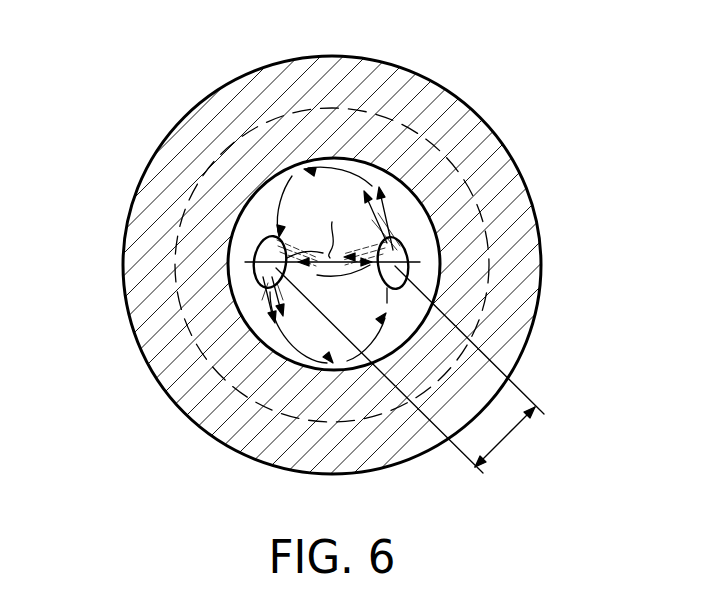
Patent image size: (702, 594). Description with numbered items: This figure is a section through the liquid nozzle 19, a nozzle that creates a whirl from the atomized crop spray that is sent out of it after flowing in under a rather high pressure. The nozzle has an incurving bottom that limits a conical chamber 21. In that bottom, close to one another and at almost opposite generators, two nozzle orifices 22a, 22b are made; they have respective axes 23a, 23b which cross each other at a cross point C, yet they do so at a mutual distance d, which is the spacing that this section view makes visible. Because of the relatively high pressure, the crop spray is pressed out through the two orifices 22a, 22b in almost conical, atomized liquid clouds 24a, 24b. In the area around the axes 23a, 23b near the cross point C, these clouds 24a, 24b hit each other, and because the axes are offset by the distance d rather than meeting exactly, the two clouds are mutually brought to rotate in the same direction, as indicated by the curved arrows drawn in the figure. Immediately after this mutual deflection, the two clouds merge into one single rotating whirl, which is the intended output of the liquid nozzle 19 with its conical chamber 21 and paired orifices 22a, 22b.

The liquid nozzle 19 is at (512, 197).
The conical chamber 21 is at (413, 215).
The nozzle orifice 22a is at (256, 262).
The nozzle orifice 22b is at (409, 262).
The axis 23a is at (395, 386).
The axis 23b is at (460, 320).
The atomized liquid cloud 24a is at (293, 350).
The atomized liquid cloud 24b is at (345, 163).
The cross point C is at (333, 224).
The mutual distance d is at (499, 419).